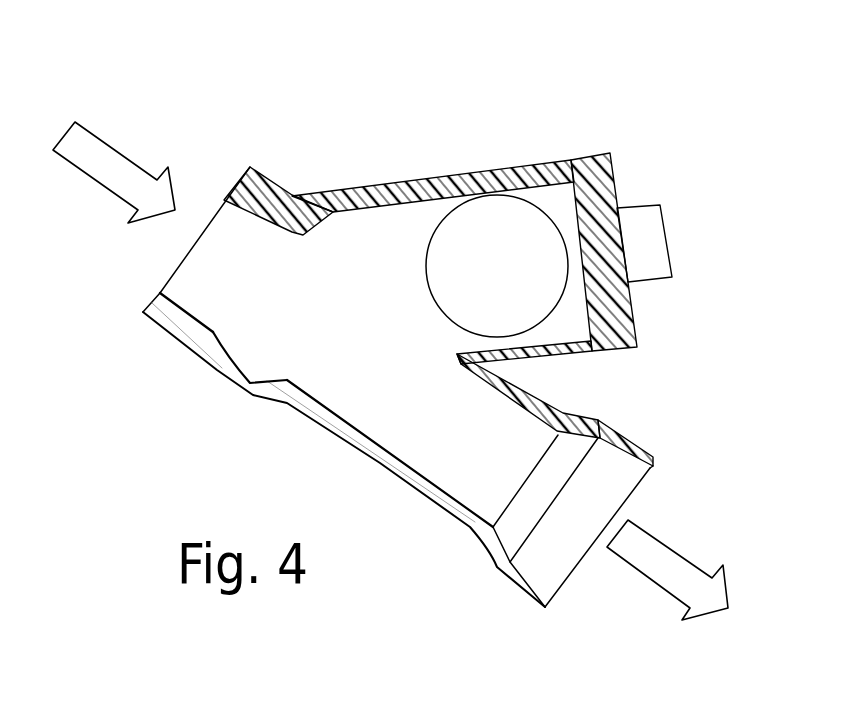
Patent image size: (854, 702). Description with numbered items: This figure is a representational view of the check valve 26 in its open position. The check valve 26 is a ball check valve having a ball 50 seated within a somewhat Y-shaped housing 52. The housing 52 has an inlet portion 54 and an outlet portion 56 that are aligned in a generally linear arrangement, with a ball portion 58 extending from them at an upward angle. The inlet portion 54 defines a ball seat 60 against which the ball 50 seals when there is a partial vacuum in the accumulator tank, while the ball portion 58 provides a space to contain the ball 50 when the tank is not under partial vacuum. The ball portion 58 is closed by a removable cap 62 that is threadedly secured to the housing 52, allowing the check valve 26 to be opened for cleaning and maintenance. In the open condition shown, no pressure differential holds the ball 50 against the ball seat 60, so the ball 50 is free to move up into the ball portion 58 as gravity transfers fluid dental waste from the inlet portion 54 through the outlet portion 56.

The check valve 26 is at (473, 106).
The ball 50 is at (450, 302).
The housing 52 is at (430, 181).
The inlet portion 54 is at (245, 233).
The outlet portion 56 is at (608, 460).
The ball portion 58 is at (548, 197).
The ball seat 60 is at (220, 333).
The removable cap 62 is at (647, 204).